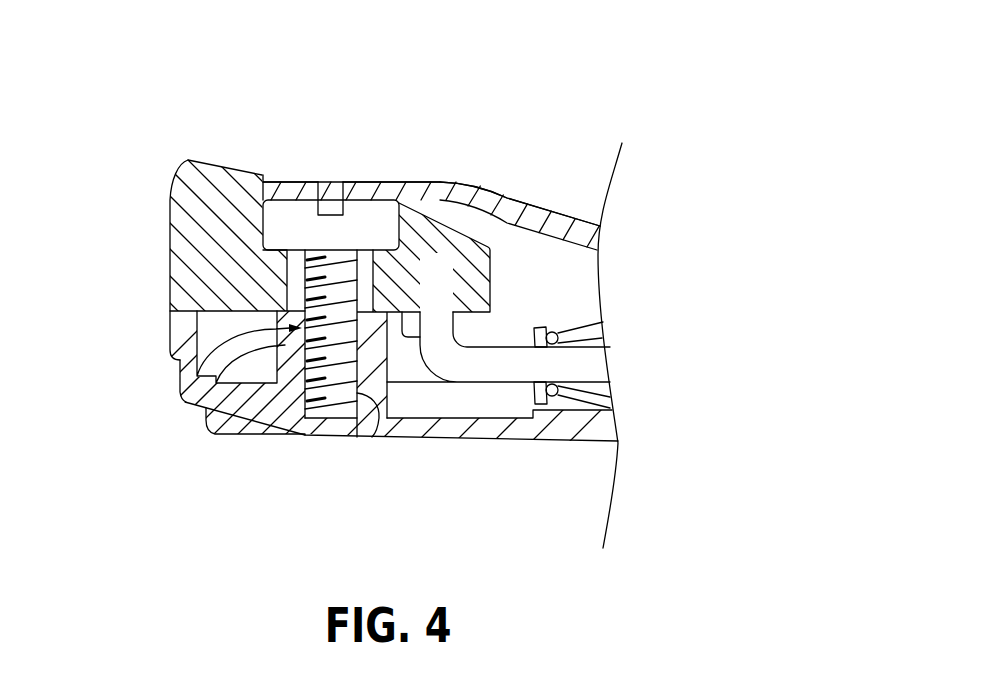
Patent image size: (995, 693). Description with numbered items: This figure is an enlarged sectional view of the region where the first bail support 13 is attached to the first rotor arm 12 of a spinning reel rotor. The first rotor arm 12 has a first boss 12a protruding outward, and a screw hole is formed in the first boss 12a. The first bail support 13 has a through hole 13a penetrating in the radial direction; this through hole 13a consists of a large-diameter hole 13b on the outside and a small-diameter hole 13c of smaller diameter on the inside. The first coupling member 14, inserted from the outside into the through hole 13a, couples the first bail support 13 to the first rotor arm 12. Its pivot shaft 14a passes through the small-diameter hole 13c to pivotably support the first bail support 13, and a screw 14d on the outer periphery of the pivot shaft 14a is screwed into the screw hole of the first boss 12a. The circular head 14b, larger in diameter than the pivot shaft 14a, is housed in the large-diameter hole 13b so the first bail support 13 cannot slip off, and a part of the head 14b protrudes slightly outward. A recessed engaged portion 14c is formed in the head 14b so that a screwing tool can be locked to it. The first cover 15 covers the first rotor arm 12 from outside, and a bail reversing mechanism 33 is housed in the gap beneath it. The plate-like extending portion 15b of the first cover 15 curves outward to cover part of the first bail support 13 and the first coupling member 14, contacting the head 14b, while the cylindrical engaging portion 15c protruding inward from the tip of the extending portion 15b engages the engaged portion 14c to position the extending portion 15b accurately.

The first rotor arm 12 is at (249, 437).
The first boss 12a is at (184, 406).
The first bail support 13 is at (200, 154).
The through hole 13a is at (267, 180).
The large-diameter hole 13b is at (262, 218).
The small-diameter hole 13c is at (287, 273).
The first coupling member 14 is at (292, 184).
The pivot shaft 14a is at (181, 361).
The head 14b is at (305, 184).
The engaged portion 14c is at (328, 195).
The screw 14d is at (372, 440).
The first cover 15 is at (546, 190).
The extending portion 15b is at (476, 182).
The engaging portion 15c is at (342, 183).
The bail reversing mechanism 33 is at (518, 392).